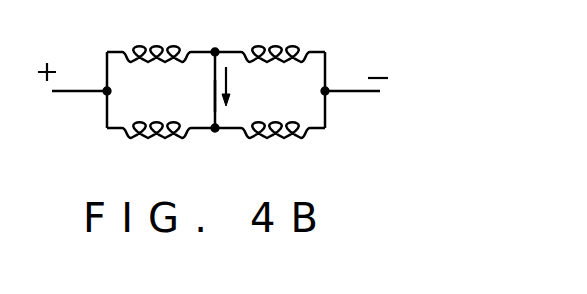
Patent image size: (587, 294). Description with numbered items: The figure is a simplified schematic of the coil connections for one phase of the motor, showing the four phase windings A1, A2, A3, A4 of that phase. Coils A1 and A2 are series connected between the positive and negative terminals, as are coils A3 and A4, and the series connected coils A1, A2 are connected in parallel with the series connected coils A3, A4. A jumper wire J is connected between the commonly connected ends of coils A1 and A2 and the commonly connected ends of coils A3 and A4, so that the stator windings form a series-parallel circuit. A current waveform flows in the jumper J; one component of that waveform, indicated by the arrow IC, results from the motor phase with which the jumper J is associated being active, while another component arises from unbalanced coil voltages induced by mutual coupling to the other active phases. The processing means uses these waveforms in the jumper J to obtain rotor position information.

The phase winding A1 is at (172, 50).
The phase winding A2 is at (293, 50).
The phase winding A3 is at (158, 140).
The phase winding A4 is at (281, 140).
The jumper wire J is at (213, 98).
The current component IC is at (239, 89).